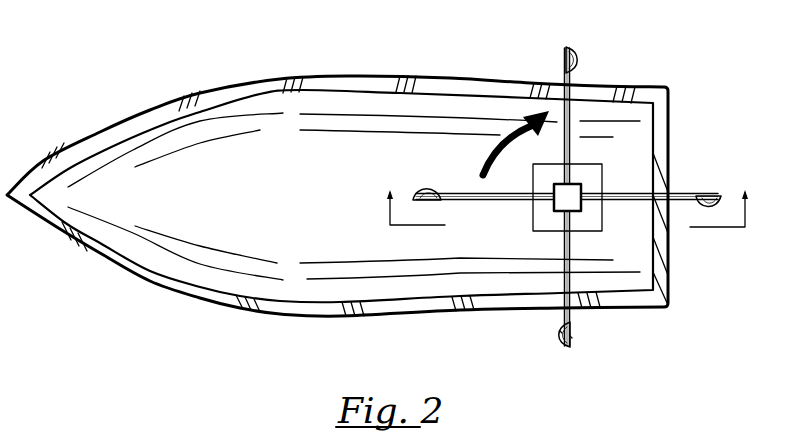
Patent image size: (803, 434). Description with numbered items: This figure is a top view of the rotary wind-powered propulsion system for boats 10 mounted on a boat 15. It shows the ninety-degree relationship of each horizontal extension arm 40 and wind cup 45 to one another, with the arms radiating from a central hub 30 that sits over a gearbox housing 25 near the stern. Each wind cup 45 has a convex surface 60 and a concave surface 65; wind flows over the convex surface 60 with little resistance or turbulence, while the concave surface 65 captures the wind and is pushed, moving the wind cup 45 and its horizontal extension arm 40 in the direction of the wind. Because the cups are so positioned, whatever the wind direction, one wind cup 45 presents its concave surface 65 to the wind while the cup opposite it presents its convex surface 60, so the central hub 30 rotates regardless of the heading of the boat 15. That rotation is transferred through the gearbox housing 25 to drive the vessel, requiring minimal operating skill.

The rotary wind-powered propulsion system for boats 10 is at (387, 215).
The boat 15 is at (170, 96).
The gearbox housing 25 is at (595, 180).
The central hub 30 is at (562, 204).
The horizontal extension arm 40 is at (571, 79).
The wind cup 45 is at (576, 50).
The convex surface 60 is at (561, 331).
The concave surface 65 is at (572, 337).